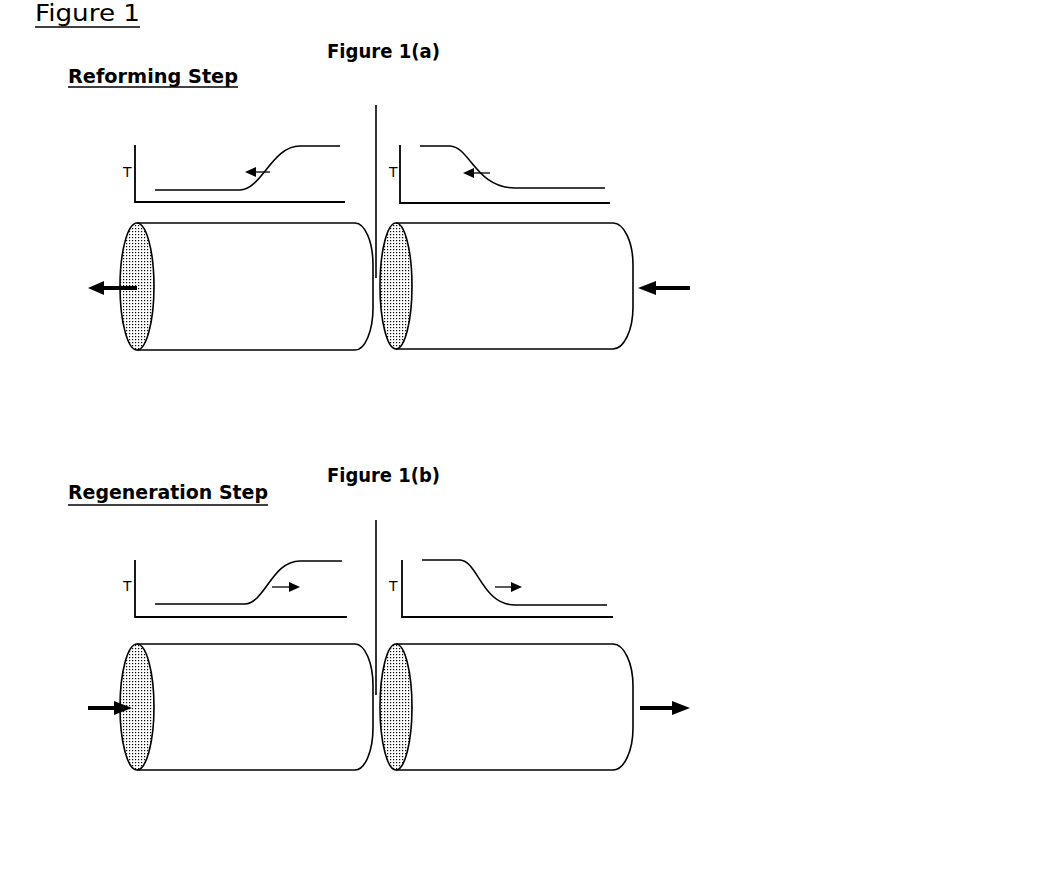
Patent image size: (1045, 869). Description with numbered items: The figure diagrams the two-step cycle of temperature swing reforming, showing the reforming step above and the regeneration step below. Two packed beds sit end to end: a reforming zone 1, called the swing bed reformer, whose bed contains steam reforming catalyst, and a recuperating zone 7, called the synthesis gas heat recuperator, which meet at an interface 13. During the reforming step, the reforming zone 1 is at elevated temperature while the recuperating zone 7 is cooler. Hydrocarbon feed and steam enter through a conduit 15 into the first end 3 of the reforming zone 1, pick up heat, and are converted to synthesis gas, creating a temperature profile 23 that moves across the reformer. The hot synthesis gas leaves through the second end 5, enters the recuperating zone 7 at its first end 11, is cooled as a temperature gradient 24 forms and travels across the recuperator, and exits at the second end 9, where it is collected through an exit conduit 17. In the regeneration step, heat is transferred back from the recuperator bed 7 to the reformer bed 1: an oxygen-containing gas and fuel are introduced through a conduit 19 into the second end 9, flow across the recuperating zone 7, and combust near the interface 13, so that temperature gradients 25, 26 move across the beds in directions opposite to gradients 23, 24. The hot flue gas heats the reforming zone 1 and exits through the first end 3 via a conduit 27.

In FIG. 1A, the reforming zone 1 is at (528, 312).
In FIG. 1B, the reforming zone 1 is at (528, 738).
In FIG. 1A, the first end of the reforming zone 3 is at (628, 333).
In FIG. 1B, the first end of the reforming zone 3 is at (628, 755).
In FIG. 1A, the second end of the reforming zone 5 is at (408, 317).
In FIG. 1B, the second end of the reforming zone 5 is at (408, 740).
In FIG. 1A, the recuperating zone 7 is at (242, 320).
In FIG. 1B, the recuperating zone 7 is at (240, 745).
In FIG. 1A, the second end of the recuperating zone 9 is at (147, 317).
In FIG. 1B, the second end of the recuperating zone 9 is at (148, 739).
In FIG. 1A, the first end of the recuperating zone 11 is at (372, 312).
In FIG. 1B, the first end of the recuperating zone 11 is at (372, 735).
In FIG. 1A, the interface 13 is at (377, 181).
In FIG. 1B, the interface 13 is at (377, 598).
In FIG. 1A, the conduit 15 is at (667, 285).
In FIG. 1A, the exit conduit 17 is at (103, 293).
In FIG. 1B, the conduit 19 is at (107, 710).
In FIG. 1A, the temperature profile 23 is at (487, 162).
In FIG. 1A, the temperature gradient 24 is at (267, 173).
In FIG. 1B, the temperature gradient 25 is at (270, 587).
In FIG. 1B, the temperature gradient 26 is at (487, 580).
In FIG. 1B, the conduit 27 is at (665, 702).